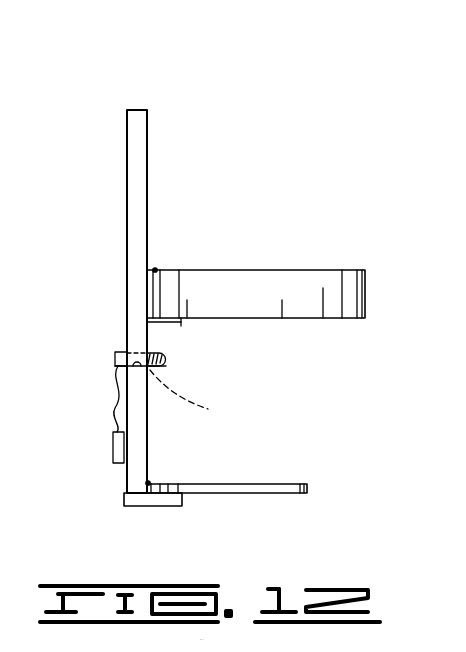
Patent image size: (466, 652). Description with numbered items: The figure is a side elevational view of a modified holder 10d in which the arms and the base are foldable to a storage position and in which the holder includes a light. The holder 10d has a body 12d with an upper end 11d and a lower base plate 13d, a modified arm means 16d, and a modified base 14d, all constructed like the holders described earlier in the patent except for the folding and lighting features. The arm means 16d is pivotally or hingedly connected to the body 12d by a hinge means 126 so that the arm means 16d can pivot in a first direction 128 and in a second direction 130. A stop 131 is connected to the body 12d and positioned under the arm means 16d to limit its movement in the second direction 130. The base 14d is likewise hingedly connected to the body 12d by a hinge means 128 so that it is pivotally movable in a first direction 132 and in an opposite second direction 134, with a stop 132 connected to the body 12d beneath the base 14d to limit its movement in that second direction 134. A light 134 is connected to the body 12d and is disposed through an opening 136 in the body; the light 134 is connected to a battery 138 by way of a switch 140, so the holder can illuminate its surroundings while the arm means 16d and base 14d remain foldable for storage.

The modified holder 10d is at (149, 168).
The upper end of post 11d is at (137, 109).
The body 12d is at (127, 135).
The base plate 13d is at (124, 495).
The modified base 14d is at (215, 484).
The modified arm means 16d is at (240, 270).
The hinge means 126 is at (155, 268).
The first direction 128 is at (148, 481).
The second direction 130 is at (395, 319).
The stop 131 is at (181, 326).
The first direction 132 is at (140, 506).
The light 134 is at (166, 363).
The opening 136 is at (198, 396).
The battery 138 is at (113, 440).
The switch 140 is at (112, 400).